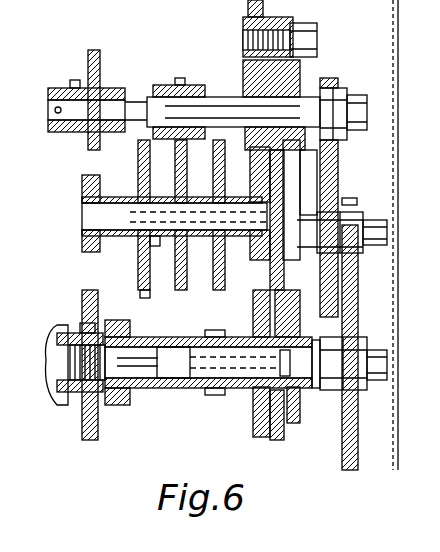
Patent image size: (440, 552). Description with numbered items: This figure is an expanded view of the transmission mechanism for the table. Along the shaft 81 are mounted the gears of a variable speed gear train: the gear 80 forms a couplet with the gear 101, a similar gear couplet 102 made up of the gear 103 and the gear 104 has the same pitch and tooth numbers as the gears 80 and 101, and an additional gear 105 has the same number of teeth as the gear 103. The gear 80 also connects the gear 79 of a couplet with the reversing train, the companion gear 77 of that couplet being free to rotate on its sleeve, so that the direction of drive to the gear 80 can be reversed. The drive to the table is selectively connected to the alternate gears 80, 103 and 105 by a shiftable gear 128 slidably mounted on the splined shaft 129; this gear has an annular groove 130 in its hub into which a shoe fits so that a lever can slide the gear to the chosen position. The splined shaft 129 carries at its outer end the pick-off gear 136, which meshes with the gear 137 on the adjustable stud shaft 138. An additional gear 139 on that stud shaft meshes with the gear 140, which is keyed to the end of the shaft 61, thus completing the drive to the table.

The shaft 61 is at (300, 385).
The gear 77 is at (120, 405).
The gear 79 is at (215, 395).
The gear 80 is at (225, 282).
The shaft 81 is at (100, 218).
The gear 101 is at (198, 237).
The gear couplet 102 is at (143, 290).
The gear 103 is at (185, 292).
The gear 104 is at (157, 240).
The gear 105 is at (143, 292).
The shiftable gear 128 is at (180, 78).
The splined shaft 129 is at (218, 105).
The annular groove 130 is at (165, 88).
The pick-off gear 136 is at (335, 85).
The gear 137 is at (340, 165).
The adjustable stud shaft 138 is at (350, 233).
The gear 139 is at (352, 198).
The gear 140 is at (350, 470).